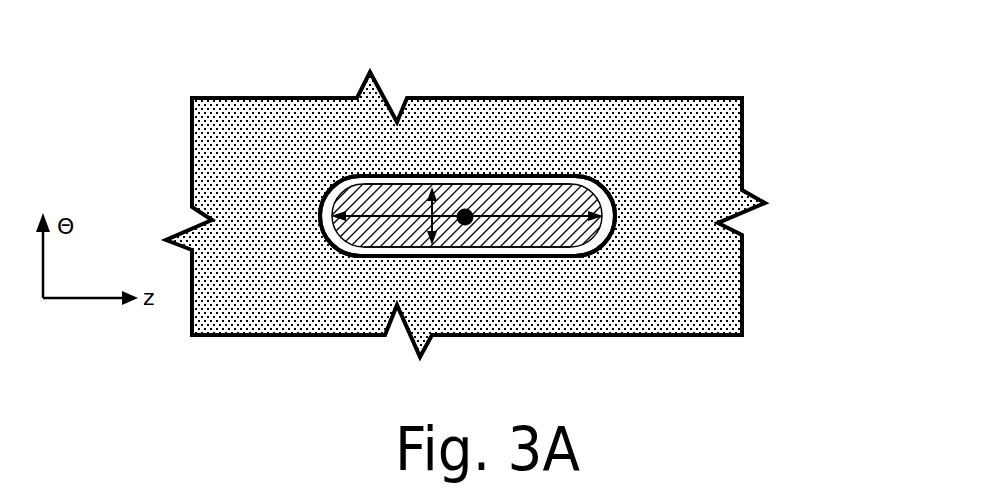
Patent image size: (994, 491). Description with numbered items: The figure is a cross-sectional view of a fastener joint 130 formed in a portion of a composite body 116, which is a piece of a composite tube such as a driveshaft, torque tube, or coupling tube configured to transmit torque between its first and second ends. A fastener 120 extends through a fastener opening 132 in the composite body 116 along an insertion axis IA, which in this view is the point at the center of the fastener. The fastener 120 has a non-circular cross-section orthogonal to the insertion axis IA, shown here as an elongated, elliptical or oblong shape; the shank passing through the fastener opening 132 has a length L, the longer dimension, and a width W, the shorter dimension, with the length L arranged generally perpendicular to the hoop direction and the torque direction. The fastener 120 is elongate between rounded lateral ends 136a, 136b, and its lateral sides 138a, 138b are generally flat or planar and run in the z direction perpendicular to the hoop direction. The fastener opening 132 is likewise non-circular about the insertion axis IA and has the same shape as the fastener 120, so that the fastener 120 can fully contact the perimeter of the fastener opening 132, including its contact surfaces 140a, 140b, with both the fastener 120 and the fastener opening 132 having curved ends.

The composite body 116 is at (232, 150).
The fastener 120 is at (527, 232).
The fastener joint 130 is at (624, 154).
The fastener opening 132 is at (566, 270).
The lateral end 136a is at (320, 210).
The lateral end 136b is at (606, 196).
The lateral side 138a is at (485, 188).
The lateral side 138b is at (513, 245).
The contact surface 140a is at (435, 182).
The contact surface 140b is at (465, 257).
The length L is at (395, 215).
The width W is at (428, 227).
The insertion axis IA is at (472, 210).